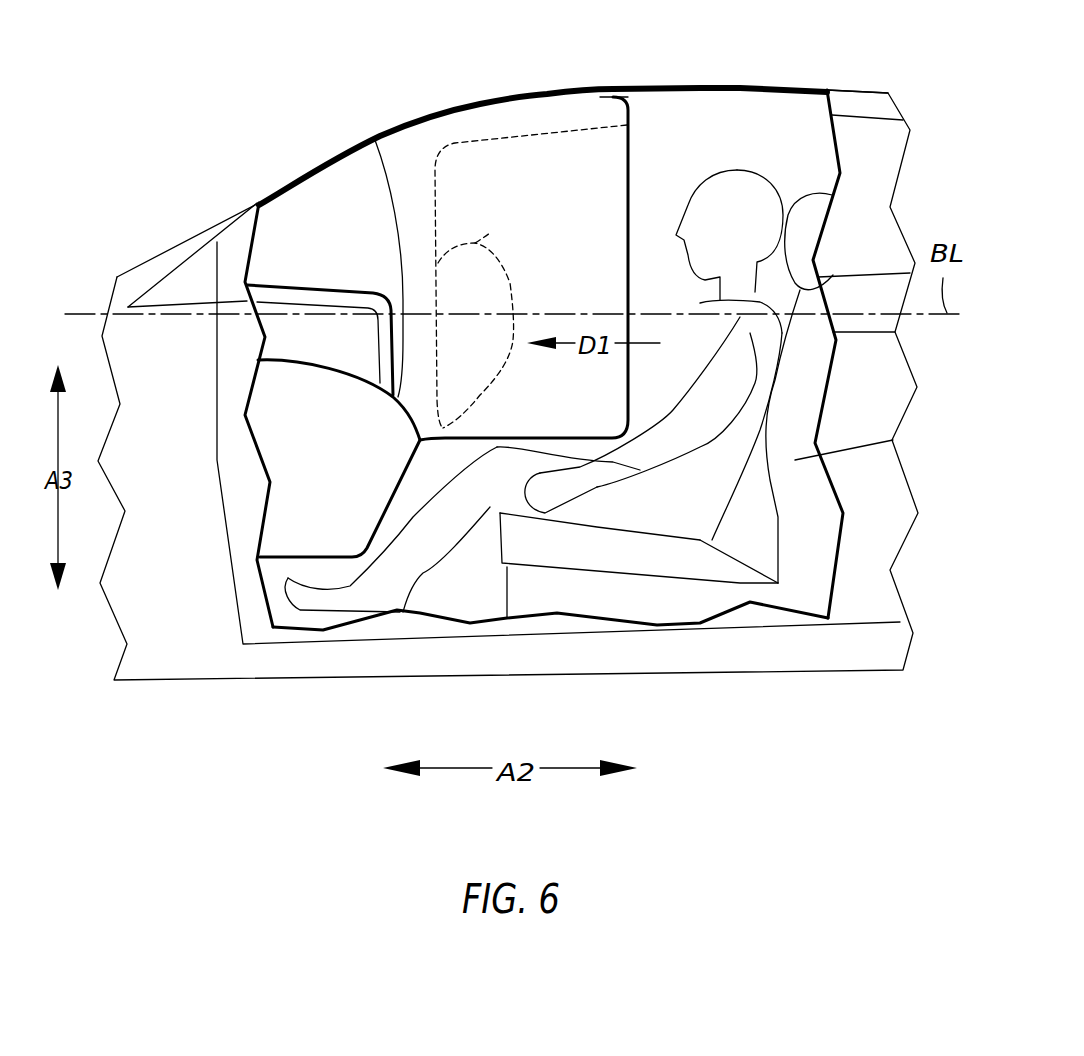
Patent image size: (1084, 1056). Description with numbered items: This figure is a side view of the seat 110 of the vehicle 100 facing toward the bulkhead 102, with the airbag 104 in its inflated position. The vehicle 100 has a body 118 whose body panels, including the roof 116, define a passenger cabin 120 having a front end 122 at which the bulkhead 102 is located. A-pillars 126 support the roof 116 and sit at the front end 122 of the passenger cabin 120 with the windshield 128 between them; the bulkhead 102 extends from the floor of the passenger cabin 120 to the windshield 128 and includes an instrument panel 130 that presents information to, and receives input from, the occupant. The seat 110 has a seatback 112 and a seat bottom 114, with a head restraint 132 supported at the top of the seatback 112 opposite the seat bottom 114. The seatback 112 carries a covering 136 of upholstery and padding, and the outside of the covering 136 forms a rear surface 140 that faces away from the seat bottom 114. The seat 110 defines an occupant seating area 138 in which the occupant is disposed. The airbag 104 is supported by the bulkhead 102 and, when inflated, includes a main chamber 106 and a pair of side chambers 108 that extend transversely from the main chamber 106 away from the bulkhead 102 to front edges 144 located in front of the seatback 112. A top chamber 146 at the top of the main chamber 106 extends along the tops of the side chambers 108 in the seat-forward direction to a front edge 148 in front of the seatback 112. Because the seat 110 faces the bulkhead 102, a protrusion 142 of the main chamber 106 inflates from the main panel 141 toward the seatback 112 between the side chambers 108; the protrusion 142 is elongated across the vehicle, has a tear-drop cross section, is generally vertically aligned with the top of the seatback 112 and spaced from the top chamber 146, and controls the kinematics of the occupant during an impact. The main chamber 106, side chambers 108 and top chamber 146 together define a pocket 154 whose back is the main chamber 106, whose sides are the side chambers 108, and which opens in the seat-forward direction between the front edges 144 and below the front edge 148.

The vehicle 100 is at (249, 104).
The bulkhead 102 is at (317, 362).
The airbag 104 is at (650, 170).
The main chamber 106 is at (407, 218).
The side chambers 108 is at (603, 212).
The seat 110 is at (802, 561).
The seatback 112 is at (755, 468).
The seat bottom 114 is at (643, 555).
The roof 116 is at (513, 88).
The body 118 is at (173, 640).
The passenger cabin 120 is at (786, 104).
The front end 122 is at (298, 615).
The A-pillar 126 is at (228, 213).
The windshield 128 is at (337, 150).
The instrument panel 130 is at (390, 305).
The head restraint 132 is at (812, 218).
The covering 136 is at (760, 518).
The occupant seating area 138 is at (647, 375).
The rear surface 140 is at (893, 440).
The main panel 141 is at (436, 226).
The protrusion 142 is at (490, 233).
The front edges 144 is at (630, 303).
The top chamber 146 is at (560, 108).
The front edge 148 is at (640, 96).
The pocket 154 is at (652, 143).